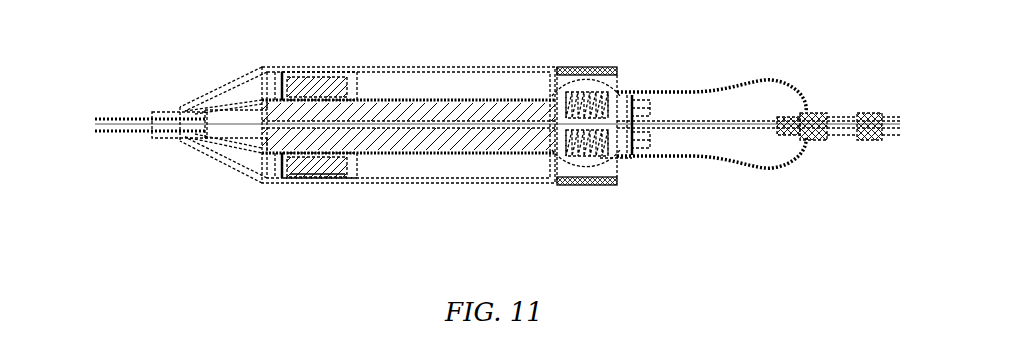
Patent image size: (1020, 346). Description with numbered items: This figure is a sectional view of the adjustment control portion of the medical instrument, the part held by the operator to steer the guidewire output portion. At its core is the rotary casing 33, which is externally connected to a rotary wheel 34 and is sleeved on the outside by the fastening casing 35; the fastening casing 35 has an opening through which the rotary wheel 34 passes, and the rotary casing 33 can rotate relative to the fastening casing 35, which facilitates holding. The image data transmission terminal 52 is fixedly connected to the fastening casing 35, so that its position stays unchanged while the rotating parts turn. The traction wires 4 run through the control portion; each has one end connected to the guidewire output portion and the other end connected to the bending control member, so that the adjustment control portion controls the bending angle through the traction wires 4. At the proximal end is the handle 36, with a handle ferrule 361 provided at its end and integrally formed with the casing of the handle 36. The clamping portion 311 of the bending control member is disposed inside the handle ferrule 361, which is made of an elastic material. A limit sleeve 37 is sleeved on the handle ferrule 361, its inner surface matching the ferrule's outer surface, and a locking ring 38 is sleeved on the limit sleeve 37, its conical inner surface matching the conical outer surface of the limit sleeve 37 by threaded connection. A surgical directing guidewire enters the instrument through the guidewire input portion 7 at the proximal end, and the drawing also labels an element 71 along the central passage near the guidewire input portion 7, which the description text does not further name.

The traction wire 4 is at (247, 102).
The guidewire input portion 7 is at (823, 143).
The rotary casing 33 is at (442, 150).
The rotary wheel 34 is at (320, 170).
The fastening casing 35 is at (427, 68).
The handle 36 is at (667, 162).
The limit sleeve 37 is at (617, 88).
The locking ring 38 is at (592, 67).
The image data transmission terminal 52 is at (410, 152).
The central rod 71 is at (737, 125).
The clamping portion 311 is at (623, 158).
The handle ferrule 361 is at (570, 85).